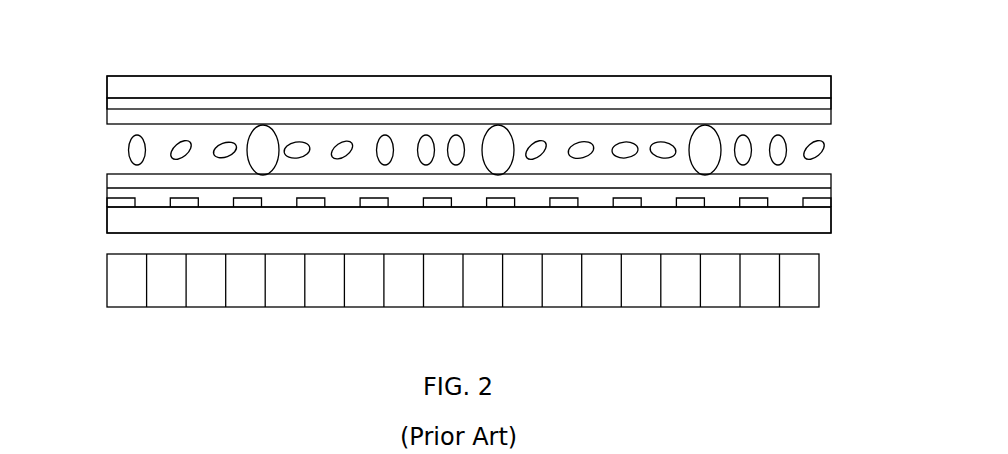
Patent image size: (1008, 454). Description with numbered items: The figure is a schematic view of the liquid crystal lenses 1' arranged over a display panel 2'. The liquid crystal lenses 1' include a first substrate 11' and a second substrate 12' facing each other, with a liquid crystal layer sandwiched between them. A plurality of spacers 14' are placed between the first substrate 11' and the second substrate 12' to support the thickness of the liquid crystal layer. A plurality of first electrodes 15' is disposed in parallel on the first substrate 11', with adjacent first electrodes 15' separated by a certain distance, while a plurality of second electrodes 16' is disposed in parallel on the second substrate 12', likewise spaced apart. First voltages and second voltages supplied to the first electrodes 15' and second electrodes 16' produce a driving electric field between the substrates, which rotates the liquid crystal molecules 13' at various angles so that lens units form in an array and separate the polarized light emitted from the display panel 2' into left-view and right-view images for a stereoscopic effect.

The liquid crystal lenses 1' is at (500, 154).
The display panel 2' is at (501, 280).
The first substrate 11' is at (427, 235).
The second substrate 12' is at (427, 89).
The liquid crystal molecules 13' is at (426, 150).
The spacers 14' is at (296, 106).
The first electrodes 15' is at (428, 208).
The second electrodes 16' is at (427, 118).